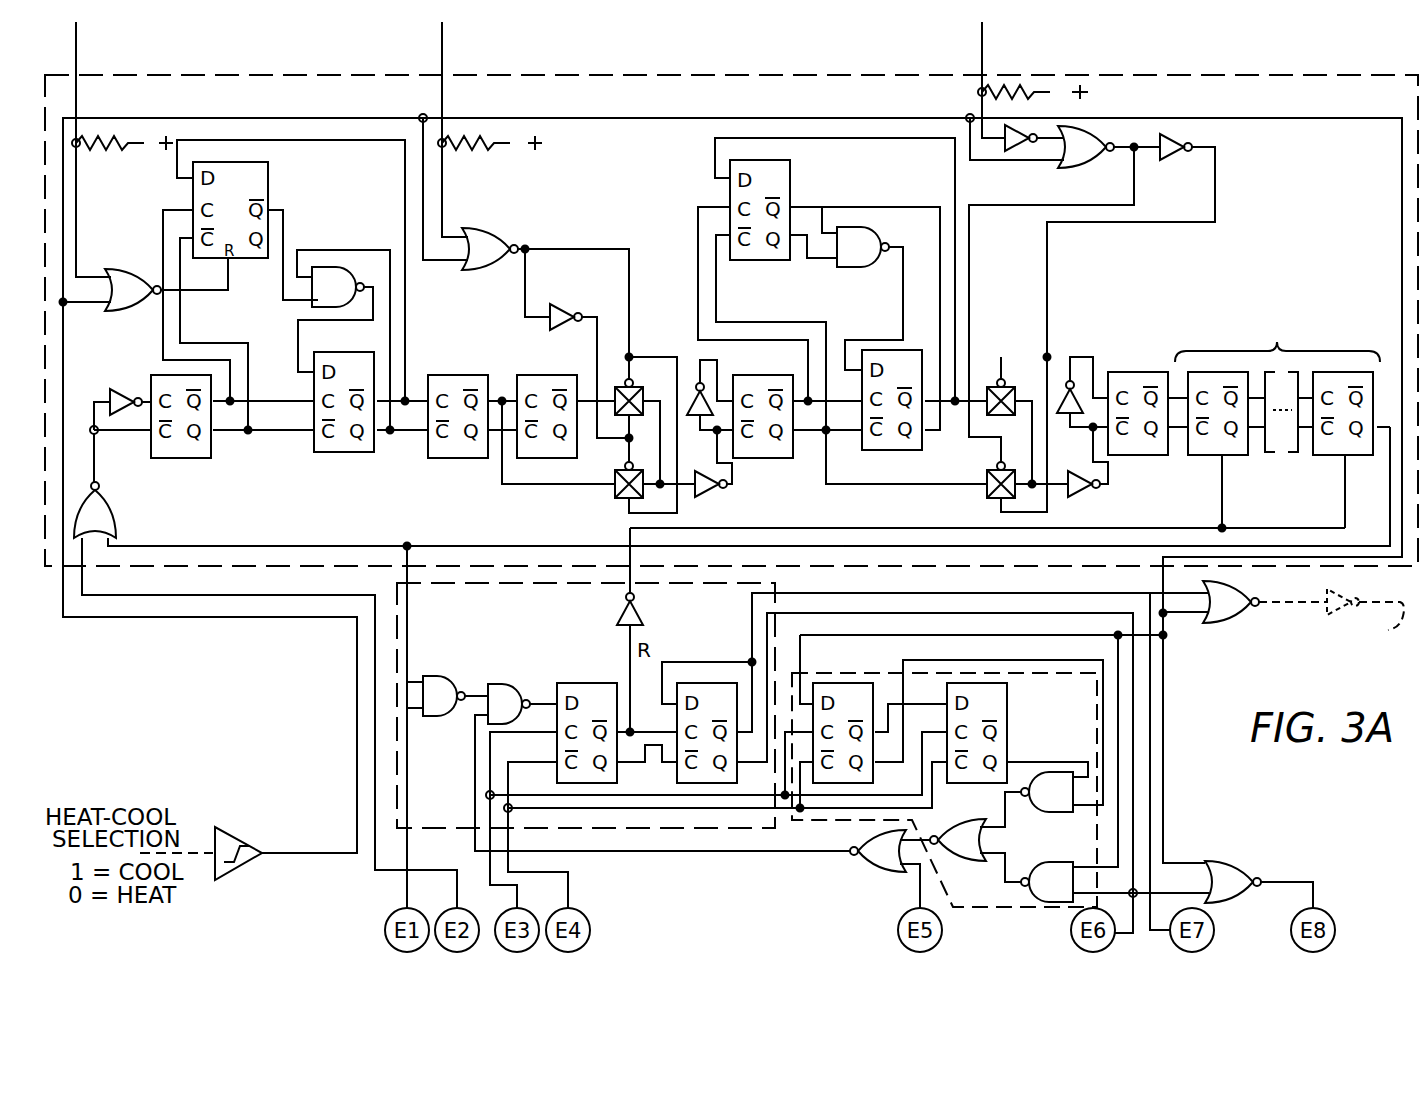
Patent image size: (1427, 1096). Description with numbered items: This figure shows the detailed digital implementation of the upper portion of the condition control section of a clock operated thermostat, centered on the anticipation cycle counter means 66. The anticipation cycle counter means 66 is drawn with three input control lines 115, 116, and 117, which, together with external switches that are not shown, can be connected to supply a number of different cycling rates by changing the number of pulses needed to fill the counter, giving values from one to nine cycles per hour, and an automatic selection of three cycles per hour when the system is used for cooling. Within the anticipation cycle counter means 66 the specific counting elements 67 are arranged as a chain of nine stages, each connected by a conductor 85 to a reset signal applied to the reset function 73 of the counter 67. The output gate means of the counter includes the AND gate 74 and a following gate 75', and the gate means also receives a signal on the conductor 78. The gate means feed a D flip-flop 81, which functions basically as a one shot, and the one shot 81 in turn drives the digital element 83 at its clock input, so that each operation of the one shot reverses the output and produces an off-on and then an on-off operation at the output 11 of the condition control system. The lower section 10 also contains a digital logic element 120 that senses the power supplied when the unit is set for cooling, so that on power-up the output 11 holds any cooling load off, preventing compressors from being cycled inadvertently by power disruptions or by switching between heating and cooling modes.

The anticipation cycle counter means 66 is at (700, 72).
The input control line 115 is at (80, 98).
The input control line 116 is at (446, 95).
The input control line 117 is at (978, 80).
The reset function 73 is at (1222, 455).
The counter 67 is at (1296, 497).
The conductor 85 is at (1100, 527).
The interface circuit 10 is at (702, 905).
The AND gate 74 is at (440, 676).
The NAND gate 75' is at (515, 684).
The one shot 81 is at (603, 688).
The digital element 83 is at (700, 688).
The digital logic element 120 is at (1022, 673).
The conductor 78 is at (916, 885).
The output 11 is at (1331, 617).